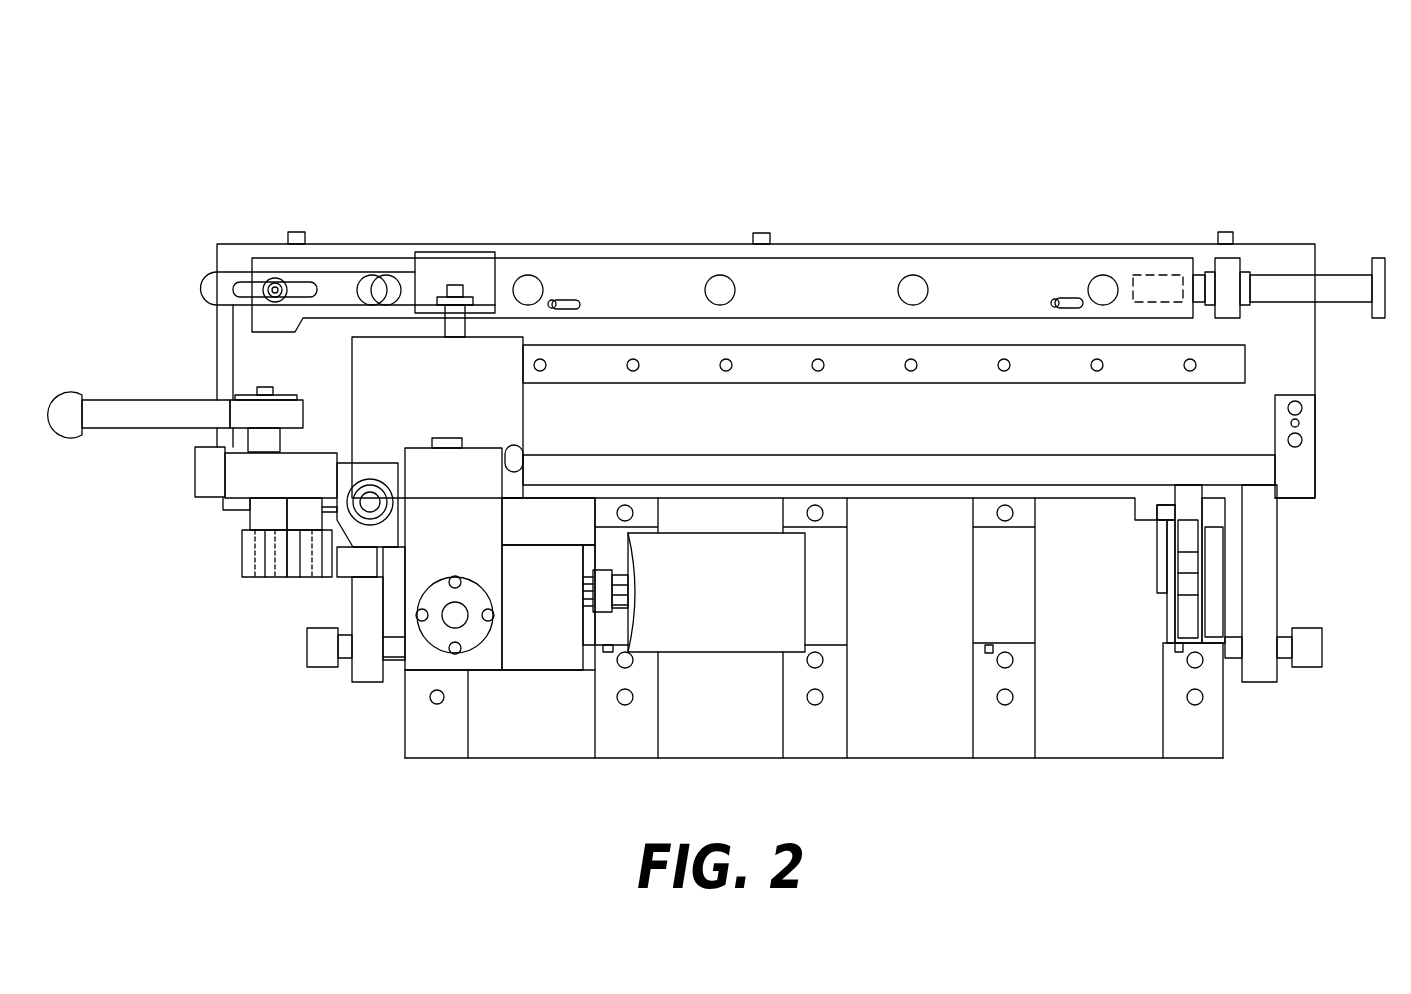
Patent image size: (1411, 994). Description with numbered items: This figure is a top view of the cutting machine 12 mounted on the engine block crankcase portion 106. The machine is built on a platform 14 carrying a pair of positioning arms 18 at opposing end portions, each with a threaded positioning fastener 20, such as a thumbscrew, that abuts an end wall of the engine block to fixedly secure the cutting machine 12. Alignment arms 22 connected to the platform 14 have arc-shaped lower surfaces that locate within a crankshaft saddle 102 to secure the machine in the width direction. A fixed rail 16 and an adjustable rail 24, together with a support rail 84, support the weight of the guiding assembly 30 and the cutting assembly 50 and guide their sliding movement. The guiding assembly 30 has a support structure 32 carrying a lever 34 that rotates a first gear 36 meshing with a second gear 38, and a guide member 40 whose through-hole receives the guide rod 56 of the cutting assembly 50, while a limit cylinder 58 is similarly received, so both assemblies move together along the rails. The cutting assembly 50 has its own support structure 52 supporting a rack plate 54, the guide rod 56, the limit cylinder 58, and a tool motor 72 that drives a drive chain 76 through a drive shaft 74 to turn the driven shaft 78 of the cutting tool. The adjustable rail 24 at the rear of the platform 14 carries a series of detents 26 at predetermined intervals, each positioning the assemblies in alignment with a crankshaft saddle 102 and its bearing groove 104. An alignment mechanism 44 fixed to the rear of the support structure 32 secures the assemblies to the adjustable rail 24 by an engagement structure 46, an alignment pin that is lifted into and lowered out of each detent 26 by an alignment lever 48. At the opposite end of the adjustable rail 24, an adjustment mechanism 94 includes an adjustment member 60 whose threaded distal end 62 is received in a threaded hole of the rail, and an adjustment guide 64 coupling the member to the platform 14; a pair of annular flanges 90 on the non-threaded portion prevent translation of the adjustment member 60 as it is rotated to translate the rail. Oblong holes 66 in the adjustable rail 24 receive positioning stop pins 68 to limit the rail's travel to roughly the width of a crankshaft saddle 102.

The cutting machine 12 is at (188, 113).
The platform 14 is at (1308, 348).
The fixed rail 16 is at (1232, 360).
The positioning arms 18 is at (352, 660).
The positioning fasteners 20 is at (307, 648).
The alignment arms 22 is at (1183, 583).
The adjustable rail 24 is at (1150, 268).
The detents 26 is at (528, 287).
The guiding assembly 30 is at (214, 535).
The support structure 32 is at (362, 385).
The lever 34 is at (72, 405).
The first gear 36 is at (262, 577).
The second gear 38 is at (307, 577).
The guide member 40 is at (410, 662).
The alignment mechanism 44 is at (162, 262).
The engagement structure 46 is at (372, 285).
The alignment lever 48 is at (215, 290).
The cutting assembly 50 is at (492, 708).
The support structure 52 is at (525, 665).
The rack plate 54 is at (345, 575).
The guide rod 56 is at (452, 603).
The limit cylinder 58 is at (370, 500).
The adjustment member 60 is at (1380, 265).
The threaded distal end 62 is at (1163, 283).
The adjustment guide 64 is at (1230, 268).
The oblong holes 66 is at (572, 303).
The positioning stop pin 68 is at (552, 303).
The tool motor 72 is at (708, 632).
The drive shaft 74 is at (620, 591).
The drive chain 76 is at (590, 590).
The driven shaft 78 is at (590, 598).
The support rail 84 is at (1270, 470).
The annular flanges 90 is at (1207, 283).
The adjustment mechanism 94 is at (1384, 228).
The crankshaft saddle 102 is at (1010, 557).
The bearing groove 104 is at (605, 652).
The engine block crankcase portion 106 is at (1107, 740).